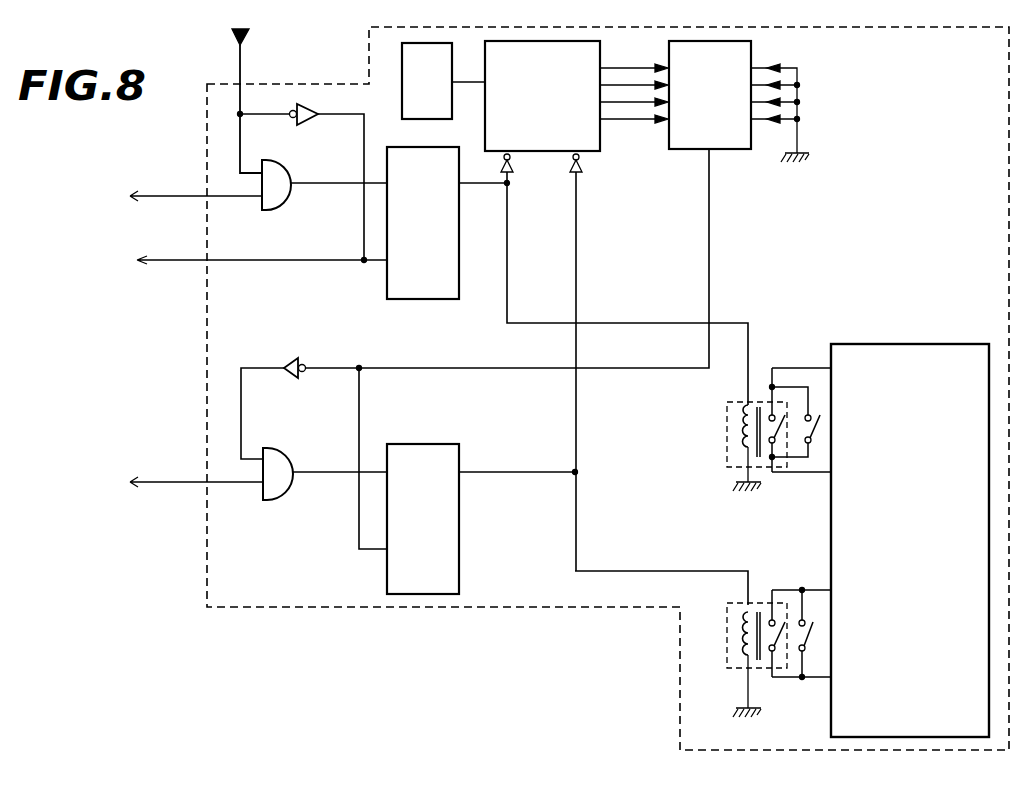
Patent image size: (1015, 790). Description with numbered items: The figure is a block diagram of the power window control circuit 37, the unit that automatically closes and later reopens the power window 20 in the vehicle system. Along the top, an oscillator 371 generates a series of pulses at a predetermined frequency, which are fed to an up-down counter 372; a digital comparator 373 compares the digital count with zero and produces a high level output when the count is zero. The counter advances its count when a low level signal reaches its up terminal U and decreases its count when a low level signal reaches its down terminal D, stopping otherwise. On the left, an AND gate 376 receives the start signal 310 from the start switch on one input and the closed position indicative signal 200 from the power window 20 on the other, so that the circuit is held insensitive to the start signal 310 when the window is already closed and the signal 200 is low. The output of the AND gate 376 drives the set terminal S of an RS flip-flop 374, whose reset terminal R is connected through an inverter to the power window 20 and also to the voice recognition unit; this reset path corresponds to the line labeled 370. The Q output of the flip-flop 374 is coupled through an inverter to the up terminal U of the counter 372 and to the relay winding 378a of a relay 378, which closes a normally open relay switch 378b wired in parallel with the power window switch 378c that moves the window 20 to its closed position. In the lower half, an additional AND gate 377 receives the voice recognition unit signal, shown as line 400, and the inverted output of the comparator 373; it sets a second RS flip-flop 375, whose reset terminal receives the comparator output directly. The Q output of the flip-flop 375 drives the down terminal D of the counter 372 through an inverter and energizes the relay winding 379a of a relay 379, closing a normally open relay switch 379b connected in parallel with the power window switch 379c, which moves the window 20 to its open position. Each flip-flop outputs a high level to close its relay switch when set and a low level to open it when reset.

The power window 20 is at (832, 516).
The power window control circuit 37 is at (318, 594).
The closed position indicative signal 200 is at (261, 101).
The start signal 310 is at (196, 185).
The output signal line 370 is at (262, 248).
The oscillator 371 is at (406, 110).
The up-down counter 372 is at (598, 60).
The digital comparator 373 is at (751, 53).
The RS flip-flop 374 is at (447, 290).
The RS flip-flop 375 is at (431, 452).
The AND gate 376 is at (288, 174).
The additional AND gate 377 is at (283, 449).
The relay 378 is at (744, 419).
The relay winding 378a is at (740, 429).
The relay switch 378b is at (782, 434).
The power window switch 378c is at (815, 412).
The relay 379 is at (753, 638).
The relay winding 379a is at (740, 636).
The relay switch 379b is at (785, 645).
The power window switch 379c is at (812, 620).
The input signal line 400 is at (196, 472).